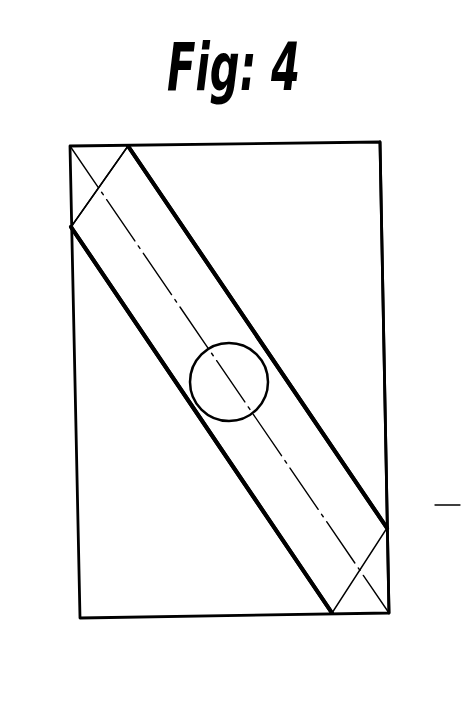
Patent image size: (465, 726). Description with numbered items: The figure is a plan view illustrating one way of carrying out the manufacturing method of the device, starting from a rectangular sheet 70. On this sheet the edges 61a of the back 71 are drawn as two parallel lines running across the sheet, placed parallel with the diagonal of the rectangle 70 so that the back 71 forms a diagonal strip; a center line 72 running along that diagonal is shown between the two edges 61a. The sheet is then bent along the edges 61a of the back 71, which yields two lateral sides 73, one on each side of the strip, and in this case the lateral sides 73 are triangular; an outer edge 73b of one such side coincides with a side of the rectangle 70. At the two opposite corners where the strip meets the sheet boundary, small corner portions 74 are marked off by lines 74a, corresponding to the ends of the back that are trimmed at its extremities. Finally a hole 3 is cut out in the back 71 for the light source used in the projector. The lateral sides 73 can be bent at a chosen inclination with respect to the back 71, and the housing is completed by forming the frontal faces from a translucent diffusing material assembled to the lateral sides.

The rectangular sheet 70 is at (122, 600).
The back 71 is at (275, 502).
The center line 72 is at (188, 320).
The lateral sides 73 is at (318, 216).
The panel edge 73b is at (396, 249).
The corner portions 74 is at (77, 182).
The cut line 74a is at (107, 168).
The strip edges 61a is at (202, 253).
The hole 3 is at (252, 372).